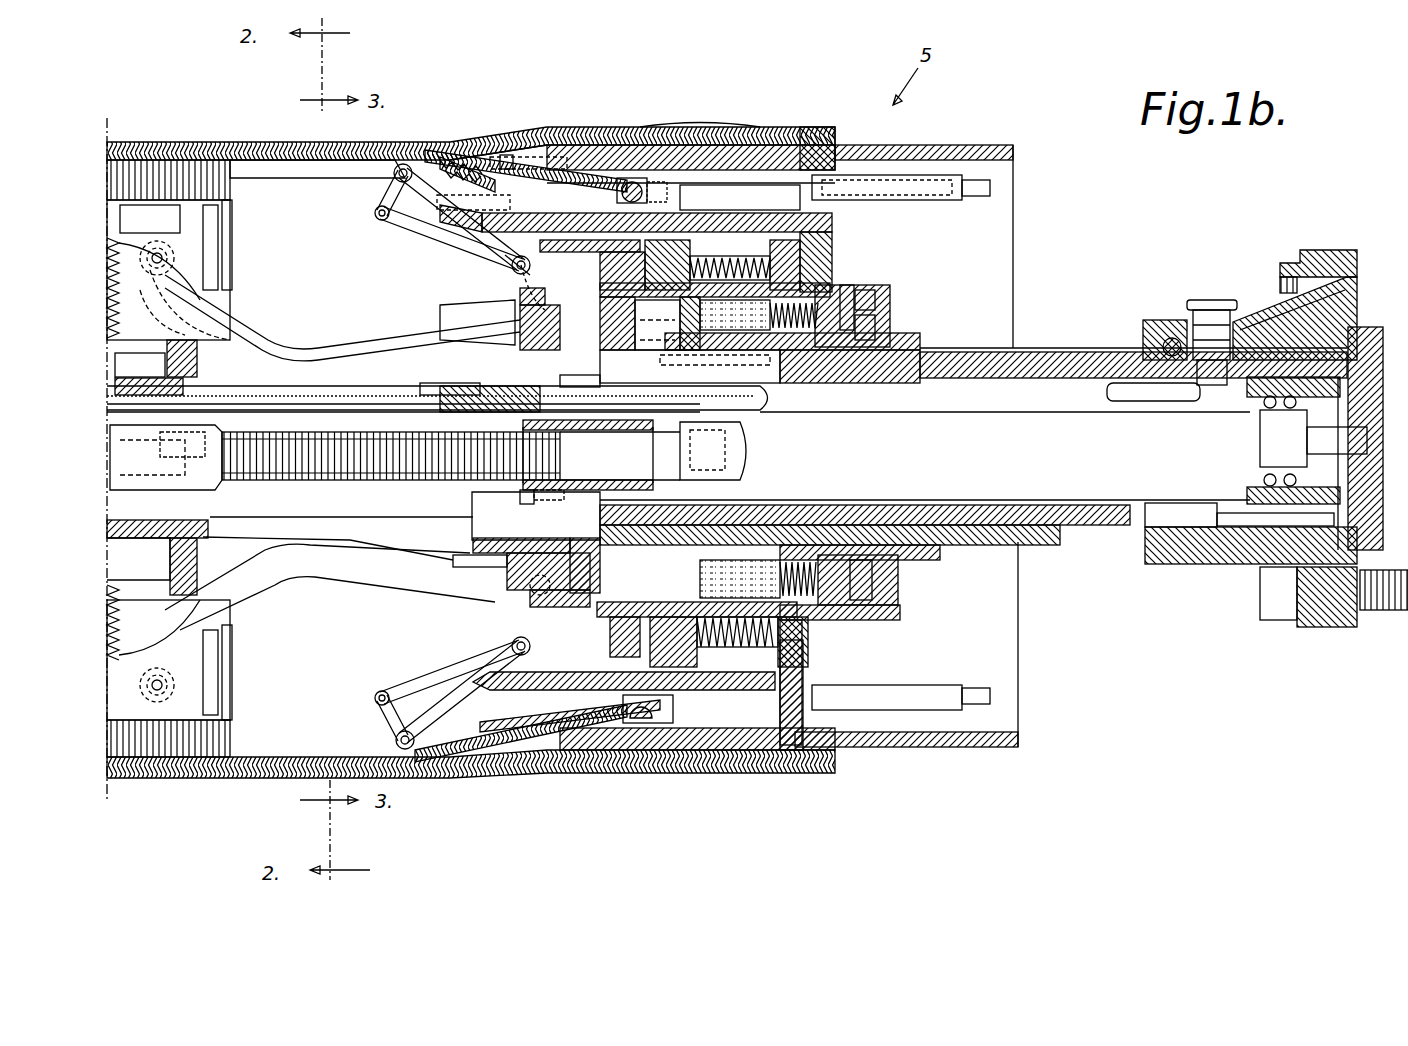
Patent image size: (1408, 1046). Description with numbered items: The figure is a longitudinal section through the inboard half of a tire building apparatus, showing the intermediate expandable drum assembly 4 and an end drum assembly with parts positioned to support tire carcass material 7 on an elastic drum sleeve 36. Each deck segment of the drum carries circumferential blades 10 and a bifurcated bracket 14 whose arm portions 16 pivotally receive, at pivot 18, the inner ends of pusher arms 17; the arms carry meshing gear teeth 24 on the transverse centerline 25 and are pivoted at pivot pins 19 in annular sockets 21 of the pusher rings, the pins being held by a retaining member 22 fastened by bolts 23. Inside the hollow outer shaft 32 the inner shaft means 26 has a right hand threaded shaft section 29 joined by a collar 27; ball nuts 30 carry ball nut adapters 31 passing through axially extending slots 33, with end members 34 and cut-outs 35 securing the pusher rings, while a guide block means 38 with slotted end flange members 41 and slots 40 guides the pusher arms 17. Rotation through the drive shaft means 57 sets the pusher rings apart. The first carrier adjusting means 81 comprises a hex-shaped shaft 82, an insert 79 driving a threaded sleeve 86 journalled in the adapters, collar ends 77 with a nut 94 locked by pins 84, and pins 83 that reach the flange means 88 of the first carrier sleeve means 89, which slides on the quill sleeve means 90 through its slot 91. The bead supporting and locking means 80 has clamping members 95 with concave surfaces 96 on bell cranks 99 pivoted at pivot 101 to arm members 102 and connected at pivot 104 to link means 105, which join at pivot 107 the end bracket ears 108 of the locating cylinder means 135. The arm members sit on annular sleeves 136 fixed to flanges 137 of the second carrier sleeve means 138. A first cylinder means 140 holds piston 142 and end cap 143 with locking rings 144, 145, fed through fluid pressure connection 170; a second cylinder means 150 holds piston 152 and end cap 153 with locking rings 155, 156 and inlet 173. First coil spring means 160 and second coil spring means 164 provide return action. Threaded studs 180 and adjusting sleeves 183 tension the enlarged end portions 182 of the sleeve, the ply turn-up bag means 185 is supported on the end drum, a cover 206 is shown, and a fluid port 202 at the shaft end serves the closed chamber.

The intermediate expandable drum assembly 4 is at (238, 212).
The tire carcass material 7 is at (235, 142).
The supporting members or blades 10 is at (162, 142).
The bifurcated bracket 14 is at (150, 245).
The arm portions 16 is at (185, 228).
The pusher arms 17 is at (265, 322).
The pivot 18 is at (168, 262).
The pivot pins 19 is at (508, 618).
The annular sockets 21 is at (508, 580).
The retaining member 22 is at (530, 303).
The bolts 23 is at (544, 309).
The meshing gear teeth 24 is at (175, 598).
The transverse centerline 25 is at (118, 700).
The inner shaft means 26 is at (343, 484).
The collar 27 is at (208, 488).
The right hand threaded shaft section 29 is at (412, 484).
The ball nuts 30 is at (582, 497).
The ball nut adapters 31 is at (522, 497).
The hollow outer shaft 32 is at (1078, 370).
The axially extending slots 33 is at (432, 392).
The end members 34 is at (508, 504).
The cut-outs 35 is at (532, 512).
The elastic drum sleeve 36 is at (300, 166).
The guide block means 38 is at (208, 556).
The slots 40 is at (195, 318).
The slotted end flange members 41 is at (217, 250).
The drive shaft means 57 is at (1060, 420).
The collar ends 77 is at (600, 395).
The insert 79 is at (430, 385).
The bead supporting and locking means 80 is at (565, 190).
The first carrier adjusting means 81 is at (403, 418).
The hex-shaped shaft 82 is at (405, 407).
The pins 83 is at (726, 323).
The pins 84 is at (655, 478).
The threaded sleeve 86 is at (745, 410).
The flange means 88 is at (602, 352).
The first carrier sleeve means 89 is at (938, 348).
The quill sleeve means 90 is at (1065, 347).
The slot 91 is at (775, 375).
The nut 94 is at (690, 367).
The clamping members 95 is at (473, 140).
The concave surfaces 96 is at (520, 135).
The bell cranks 99 is at (385, 195).
The pivot 101 is at (380, 182).
The arm members 102 is at (400, 168).
The pivot connection 104 is at (385, 225).
The link means 105 is at (445, 240).
The pivot connection 107 is at (505, 268).
The end bracket ears 108 is at (525, 256).
The locating cylinder means 135 is at (590, 255).
The annular sleeves 136 is at (590, 222).
The flanges 137 is at (815, 245).
The second carrier sleeve means 138 is at (890, 285).
The first cylinder means 140 is at (895, 585).
The piston 142 is at (895, 300).
The end cap 143 is at (896, 315).
The locking ring 144 is at (840, 560).
The locking ring 145 is at (896, 600).
The second cylinder means 150 is at (650, 655).
The piston 152 is at (612, 630).
The end cap 153 is at (705, 650).
The locking ring 155 is at (697, 598).
The locking ring 156 is at (700, 650).
The first coil spring means 160 is at (810, 290).
The second coil spring means 164 is at (728, 258).
The fluid pressure connection 170 is at (848, 292).
The fluid pressure inlet 173 is at (690, 215).
The threaded studs 180 is at (740, 195).
The enlarged annular end portions 182 is at (634, 180).
The threaded adjusting sleeves 183 is at (935, 205).
The inflatable ply turn-up bag means 185 is at (806, 142).
The fluid port 202 is at (1240, 415).
The cover 206 is at (690, 128).